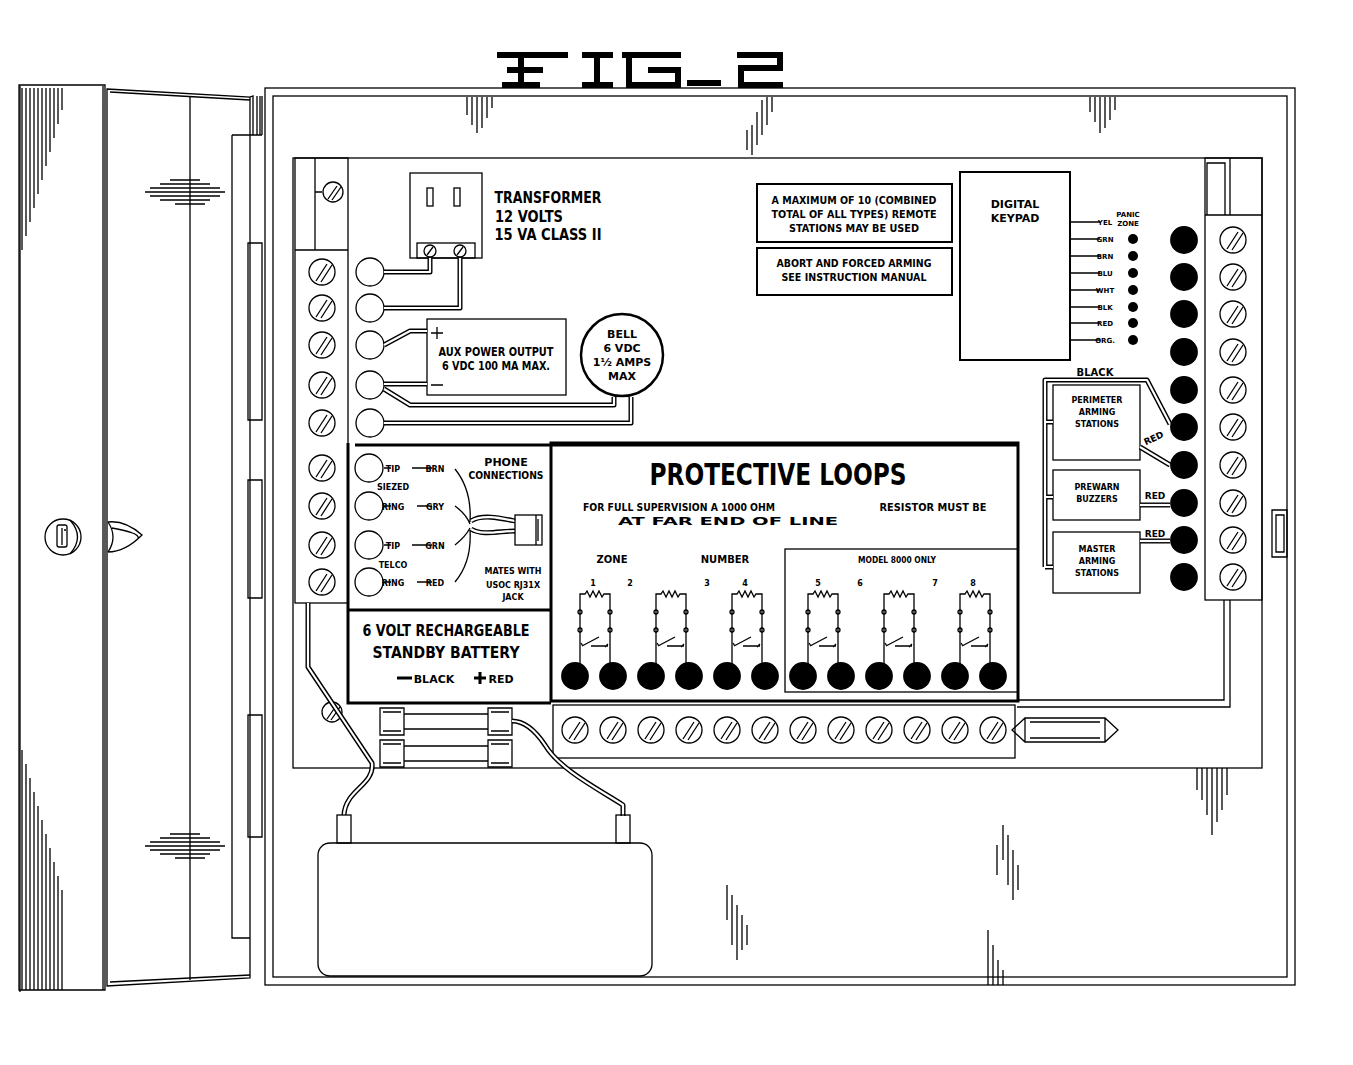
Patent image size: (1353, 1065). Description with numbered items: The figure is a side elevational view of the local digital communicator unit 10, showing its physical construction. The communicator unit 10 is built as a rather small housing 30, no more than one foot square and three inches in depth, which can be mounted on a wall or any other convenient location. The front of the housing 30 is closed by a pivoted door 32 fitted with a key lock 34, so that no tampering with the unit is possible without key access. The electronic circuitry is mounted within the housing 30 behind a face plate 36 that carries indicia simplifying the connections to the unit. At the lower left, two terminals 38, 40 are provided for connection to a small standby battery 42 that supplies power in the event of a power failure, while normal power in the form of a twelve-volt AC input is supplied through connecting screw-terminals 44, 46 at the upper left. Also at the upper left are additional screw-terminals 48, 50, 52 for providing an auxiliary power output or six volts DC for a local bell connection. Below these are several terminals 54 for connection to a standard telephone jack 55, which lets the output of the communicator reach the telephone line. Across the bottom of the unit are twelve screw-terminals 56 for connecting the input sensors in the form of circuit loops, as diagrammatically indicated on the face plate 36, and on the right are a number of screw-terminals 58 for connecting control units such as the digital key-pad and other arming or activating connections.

The communicator unit 10 is at (1258, 83).
The housing 30 is at (1290, 186).
The pivoted door 32 is at (142, 87).
The key lock 34 is at (62, 520).
The face plate 36 is at (883, 876).
The terminal 38 is at (358, 787).
The terminal 40 is at (570, 783).
The standby battery 42 is at (504, 846).
The screw-terminal 44 is at (335, 270).
The screw-terminal 46 is at (335, 307).
The screw-terminal 48 is at (308, 345).
The screw-terminal 50 is at (308, 385).
The screw-terminal 52 is at (308, 423).
The terminals 54 is at (310, 582).
The telephone jack 55 is at (540, 532).
The screw-terminals 56 is at (583, 741).
The screw-terminals 58 is at (1243, 243).